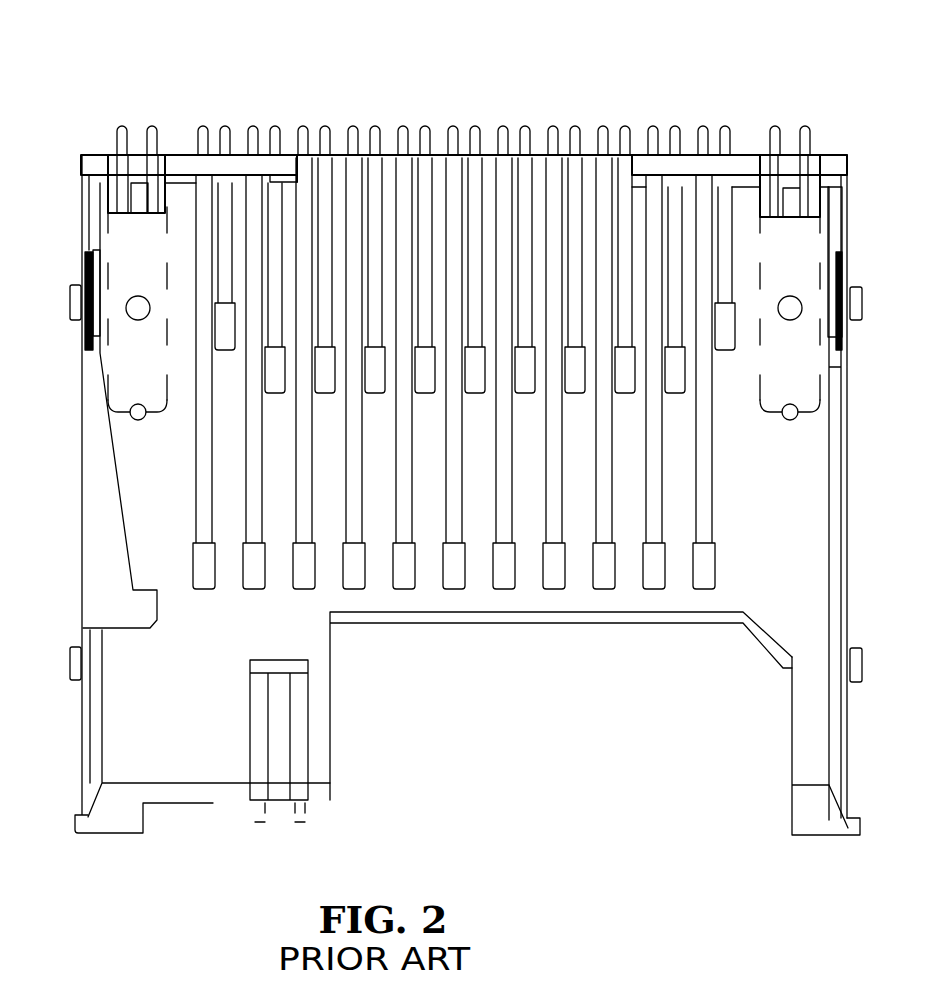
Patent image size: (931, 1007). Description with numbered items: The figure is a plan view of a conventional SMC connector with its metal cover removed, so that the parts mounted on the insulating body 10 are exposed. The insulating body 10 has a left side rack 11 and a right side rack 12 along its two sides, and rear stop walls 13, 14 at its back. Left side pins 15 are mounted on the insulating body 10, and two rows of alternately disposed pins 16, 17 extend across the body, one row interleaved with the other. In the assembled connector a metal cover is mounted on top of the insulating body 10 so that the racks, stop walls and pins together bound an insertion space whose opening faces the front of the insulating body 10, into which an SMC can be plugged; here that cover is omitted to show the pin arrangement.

The insulating body 10 is at (651, 685).
The left side rack 11 is at (78, 738).
The right side rack 12 is at (838, 765).
The rear stop wall 13 is at (180, 163).
The rear stop wall 14 is at (740, 163).
The left side pin 15 is at (300, 740).
The pin 16 is at (203, 447).
The pin 17 is at (325, 217).